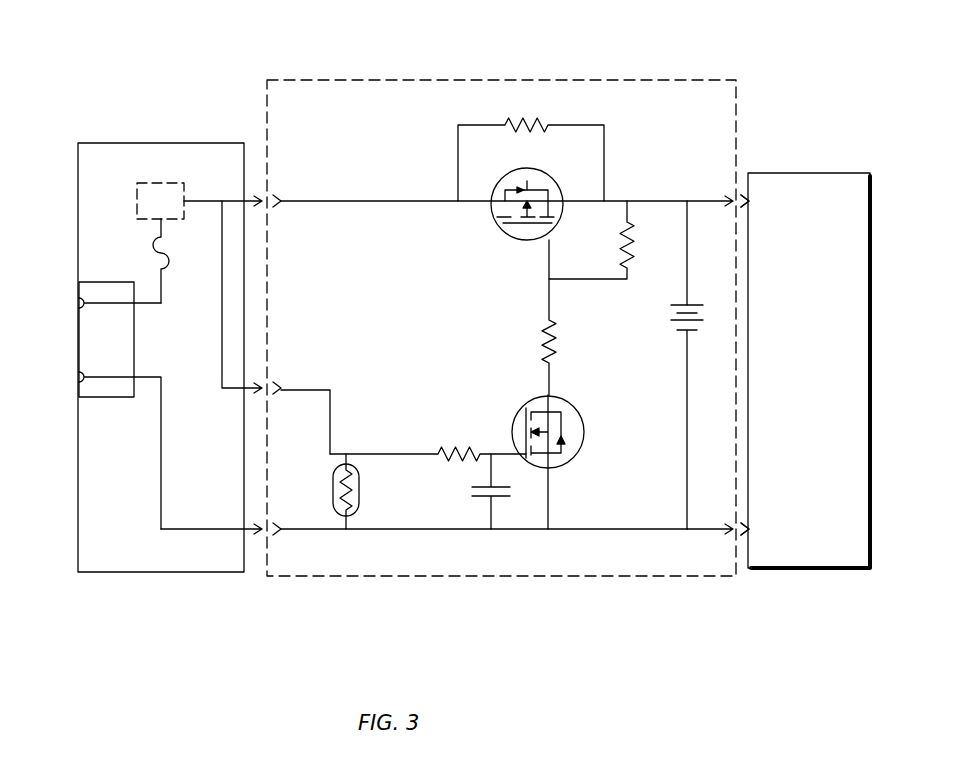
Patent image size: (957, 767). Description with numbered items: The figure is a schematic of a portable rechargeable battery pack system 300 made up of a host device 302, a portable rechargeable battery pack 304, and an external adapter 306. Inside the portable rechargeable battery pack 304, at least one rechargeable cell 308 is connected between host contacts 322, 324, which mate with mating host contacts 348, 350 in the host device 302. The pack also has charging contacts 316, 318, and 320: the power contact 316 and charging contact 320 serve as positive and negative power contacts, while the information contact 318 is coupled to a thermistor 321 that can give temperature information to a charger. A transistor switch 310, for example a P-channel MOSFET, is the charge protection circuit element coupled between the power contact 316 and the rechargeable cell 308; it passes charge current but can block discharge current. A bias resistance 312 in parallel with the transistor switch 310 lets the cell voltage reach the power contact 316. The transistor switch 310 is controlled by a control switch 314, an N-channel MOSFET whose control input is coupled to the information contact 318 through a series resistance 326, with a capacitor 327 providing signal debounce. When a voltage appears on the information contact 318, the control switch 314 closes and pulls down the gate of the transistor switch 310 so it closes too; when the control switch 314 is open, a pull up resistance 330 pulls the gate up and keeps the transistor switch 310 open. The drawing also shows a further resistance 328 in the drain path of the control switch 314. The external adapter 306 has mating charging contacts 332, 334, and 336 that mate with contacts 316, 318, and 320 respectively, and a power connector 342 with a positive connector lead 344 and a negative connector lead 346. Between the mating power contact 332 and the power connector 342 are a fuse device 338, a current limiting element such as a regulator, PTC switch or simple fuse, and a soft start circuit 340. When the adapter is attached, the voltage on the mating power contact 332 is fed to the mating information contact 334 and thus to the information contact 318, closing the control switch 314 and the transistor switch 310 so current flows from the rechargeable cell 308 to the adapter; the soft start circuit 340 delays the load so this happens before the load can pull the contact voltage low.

The portable rechargeable battery pack system 300 is at (142, 53).
The host device 302 is at (808, 173).
The portable rechargeable battery pack 304 is at (620, 80).
The external adapter 306 is at (145, 573).
The rechargeable cell 308 is at (685, 330).
The transistor switch 310 is at (512, 238).
The resistance 312 is at (512, 124).
The control switch 314 is at (580, 420).
The power contact 316 is at (283, 201).
The information contact 318 is at (283, 390).
The charging contact 320 is at (283, 528).
The thermistor 321 is at (360, 487).
The host contact 322 is at (705, 200).
The host contact 324 is at (715, 532).
The resistance 326 is at (468, 447).
The capacitor 327 is at (480, 498).
The resistor 328 is at (542, 331).
The pull up resistance 330 is at (623, 256).
The mating power contact 332 is at (232, 198).
The mating information contact 334 is at (232, 393).
The mating charging contact 336 is at (205, 528).
The fuse device 338 is at (153, 248).
The soft start circuit 340 is at (137, 200).
The power connector 342 is at (100, 397).
The positive connector lead 344 is at (78, 303).
The negative connector lead 346 is at (78, 377).
The mating host contact 348 is at (749, 201).
The mating host contact 350 is at (749, 529).